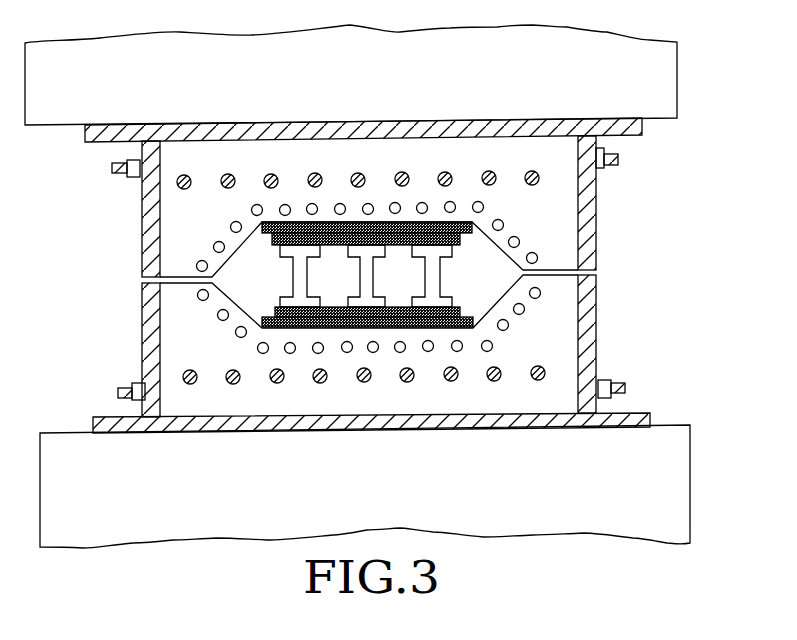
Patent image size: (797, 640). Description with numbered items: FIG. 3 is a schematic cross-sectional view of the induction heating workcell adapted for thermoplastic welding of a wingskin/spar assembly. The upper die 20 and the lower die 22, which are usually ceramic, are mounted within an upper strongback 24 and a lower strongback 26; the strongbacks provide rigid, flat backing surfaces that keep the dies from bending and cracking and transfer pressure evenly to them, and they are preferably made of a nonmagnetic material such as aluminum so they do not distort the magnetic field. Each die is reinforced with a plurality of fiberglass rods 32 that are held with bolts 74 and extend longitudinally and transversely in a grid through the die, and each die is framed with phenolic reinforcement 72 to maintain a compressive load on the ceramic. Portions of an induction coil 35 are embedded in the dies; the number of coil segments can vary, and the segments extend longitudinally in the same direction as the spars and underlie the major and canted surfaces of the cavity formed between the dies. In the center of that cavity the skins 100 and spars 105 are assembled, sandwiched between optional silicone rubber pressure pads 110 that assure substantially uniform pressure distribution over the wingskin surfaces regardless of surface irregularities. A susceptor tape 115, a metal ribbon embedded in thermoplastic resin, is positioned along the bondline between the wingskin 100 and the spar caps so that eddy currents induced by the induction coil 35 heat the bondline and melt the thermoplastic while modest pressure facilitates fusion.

The upper die 20 is at (363, 197).
The lower die 22 is at (527, 403).
The upper strongback 24 is at (677, 90).
The lower strongback 26 is at (693, 493).
The fiberglass rods 32 is at (530, 170).
The induction coil 35 is at (542, 259).
The phenolic reinforcement 72 is at (127, 183).
The bolts 74 is at (604, 169).
The skins 100 is at (470, 232).
The spars 105 is at (362, 276).
The silicone rubber pressure pads 110 is at (472, 222).
The susceptor tape 115 is at (275, 306).